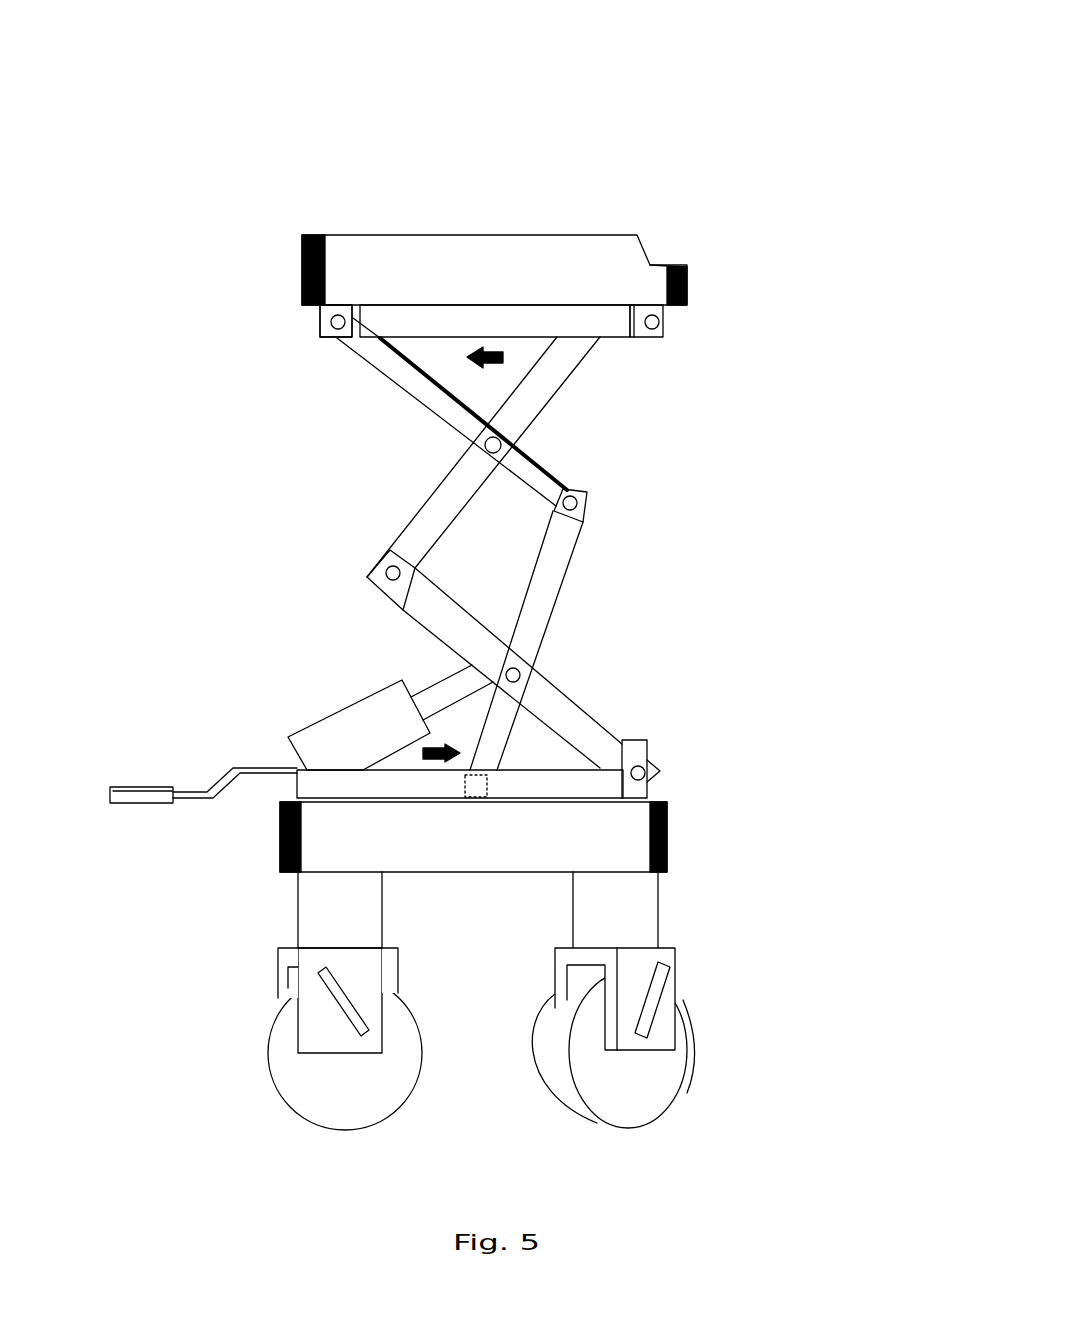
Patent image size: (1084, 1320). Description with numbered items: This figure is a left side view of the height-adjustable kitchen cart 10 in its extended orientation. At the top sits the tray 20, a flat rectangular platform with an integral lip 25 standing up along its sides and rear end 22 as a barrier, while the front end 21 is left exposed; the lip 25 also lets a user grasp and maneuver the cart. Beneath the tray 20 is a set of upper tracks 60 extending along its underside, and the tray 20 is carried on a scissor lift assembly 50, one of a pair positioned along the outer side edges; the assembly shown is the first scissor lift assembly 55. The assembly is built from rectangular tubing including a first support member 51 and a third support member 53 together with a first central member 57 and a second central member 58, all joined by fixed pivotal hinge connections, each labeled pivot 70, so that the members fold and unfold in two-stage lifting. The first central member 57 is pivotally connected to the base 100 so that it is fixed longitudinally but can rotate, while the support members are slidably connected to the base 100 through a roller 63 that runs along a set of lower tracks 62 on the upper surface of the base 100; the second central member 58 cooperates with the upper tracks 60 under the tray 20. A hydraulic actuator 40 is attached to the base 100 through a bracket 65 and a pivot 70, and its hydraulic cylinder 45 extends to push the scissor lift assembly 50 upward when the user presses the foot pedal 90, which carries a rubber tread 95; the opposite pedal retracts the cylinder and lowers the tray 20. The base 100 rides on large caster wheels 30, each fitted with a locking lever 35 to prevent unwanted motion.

The height-adjustable kitchen cart 10 is at (857, 148).
The tray 20 is at (683, 267).
The front end 21 is at (714, 295).
The rear end 22 is at (258, 294).
The lip 25 is at (345, 270).
The caster wheel 30 is at (658, 1072).
The locking lever 35 is at (333, 995).
The hydraulic actuator 40 is at (365, 715).
The hydraulic cylinder 45 is at (457, 685).
The scissor lift assembly 50 is at (598, 534).
The first support member 51 is at (543, 587).
The third support member 53 is at (397, 388).
The first scissor lift assembly 55 is at (232, 540).
The first central member 57 is at (437, 633).
The second central member 58 is at (553, 382).
The set of upper tracks 60 is at (528, 323).
The set of lower tracks 62 is at (582, 788).
The roller 63 is at (473, 785).
The bracket 65 is at (318, 303).
The pivot 70 is at (330, 323).
The foot pedal 90 is at (128, 795).
The rubber tread 95 is at (133, 787).
The base 100 is at (478, 828).